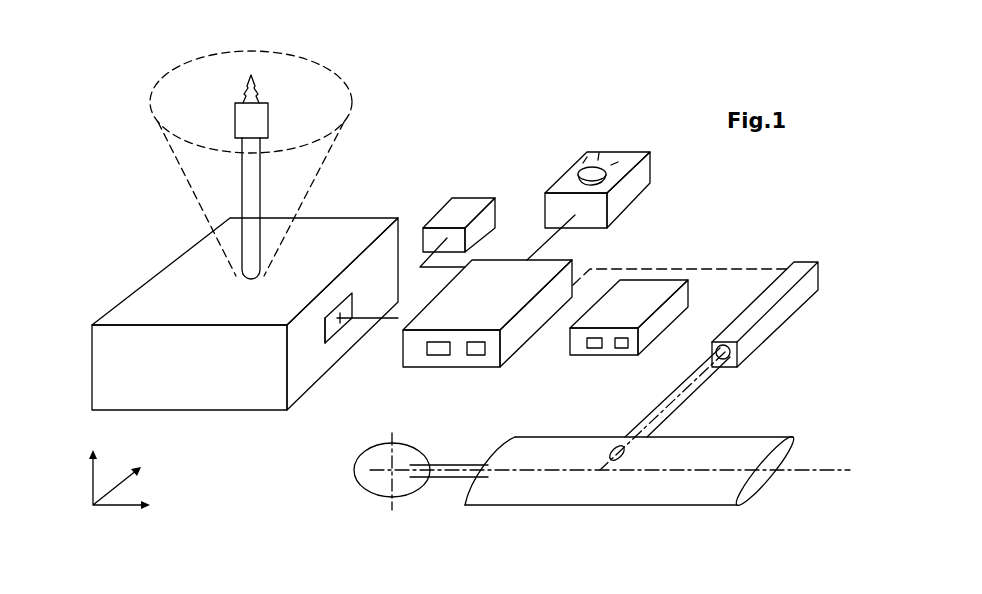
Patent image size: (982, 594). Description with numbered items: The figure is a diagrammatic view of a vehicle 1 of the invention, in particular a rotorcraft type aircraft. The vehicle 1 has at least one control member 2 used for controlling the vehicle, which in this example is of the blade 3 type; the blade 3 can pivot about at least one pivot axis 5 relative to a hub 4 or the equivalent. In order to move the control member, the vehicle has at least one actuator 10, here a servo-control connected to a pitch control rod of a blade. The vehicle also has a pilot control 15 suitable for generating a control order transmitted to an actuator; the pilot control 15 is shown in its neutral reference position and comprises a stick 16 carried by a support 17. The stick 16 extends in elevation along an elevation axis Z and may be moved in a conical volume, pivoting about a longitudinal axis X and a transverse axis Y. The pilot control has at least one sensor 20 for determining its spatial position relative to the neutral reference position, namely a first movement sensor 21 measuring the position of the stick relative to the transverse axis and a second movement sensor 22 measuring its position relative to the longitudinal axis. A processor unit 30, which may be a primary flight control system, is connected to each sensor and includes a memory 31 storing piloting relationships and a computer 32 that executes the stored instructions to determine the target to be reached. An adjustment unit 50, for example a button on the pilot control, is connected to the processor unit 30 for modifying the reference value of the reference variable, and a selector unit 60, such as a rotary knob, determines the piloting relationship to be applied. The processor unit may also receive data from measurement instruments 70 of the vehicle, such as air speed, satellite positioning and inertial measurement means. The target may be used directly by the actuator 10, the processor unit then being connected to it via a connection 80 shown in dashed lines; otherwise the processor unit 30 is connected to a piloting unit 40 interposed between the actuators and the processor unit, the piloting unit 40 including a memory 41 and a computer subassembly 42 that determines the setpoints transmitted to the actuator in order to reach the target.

The vehicle 1 is at (107, 88).
The control member 2 is at (573, 502).
The blade 3 is at (737, 504).
The hub 4 is at (354, 466).
The pivot axis 5 is at (822, 470).
The actuator 10 is at (803, 298).
The pilot control 15 is at (368, 152).
The stick 16 is at (243, 178).
The support 17 is at (374, 218).
The sensor 20 is at (252, 293).
The first movement sensor 21 is at (325, 320).
The second movement sensor 22 is at (352, 318).
The processor unit 30 is at (487, 294).
The memory 31 is at (438, 357).
The computer 32 is at (477, 357).
The piloting unit 40 is at (624, 321).
The memory 41 is at (597, 348).
The computer subassembly 42 is at (622, 348).
The adjustment unit 50 is at (270, 75).
The selector unit 60 is at (630, 152).
The measurement instruments 70 is at (444, 198).
The connection 80 is at (742, 269).